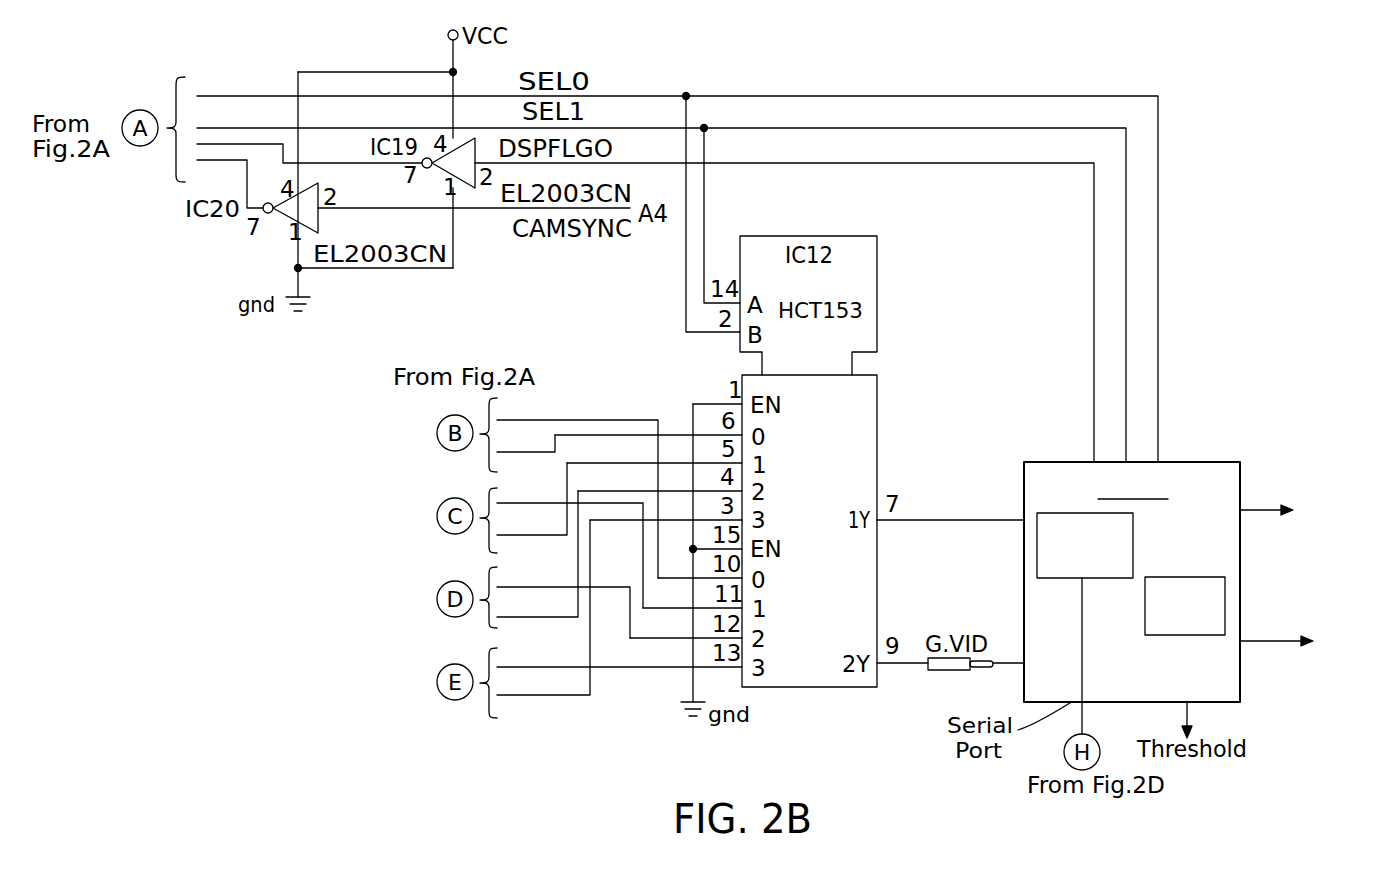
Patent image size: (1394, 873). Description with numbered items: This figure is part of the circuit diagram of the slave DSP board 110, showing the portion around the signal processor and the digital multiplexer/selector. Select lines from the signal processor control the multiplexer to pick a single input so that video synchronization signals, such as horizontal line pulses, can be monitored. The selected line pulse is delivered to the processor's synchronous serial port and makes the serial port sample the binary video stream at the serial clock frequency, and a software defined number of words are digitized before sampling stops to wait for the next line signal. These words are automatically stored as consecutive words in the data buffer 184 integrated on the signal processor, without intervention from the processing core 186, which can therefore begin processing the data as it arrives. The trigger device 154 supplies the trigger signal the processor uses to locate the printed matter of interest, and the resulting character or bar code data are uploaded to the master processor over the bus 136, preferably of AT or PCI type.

The slave DSP board 110 is at (1222, 86).
The data buffer 184 is at (1133, 540).
The processing core 186 is at (1173, 635).
The bus 136 is at (1268, 641).
The trigger device 154 is at (1305, 526).